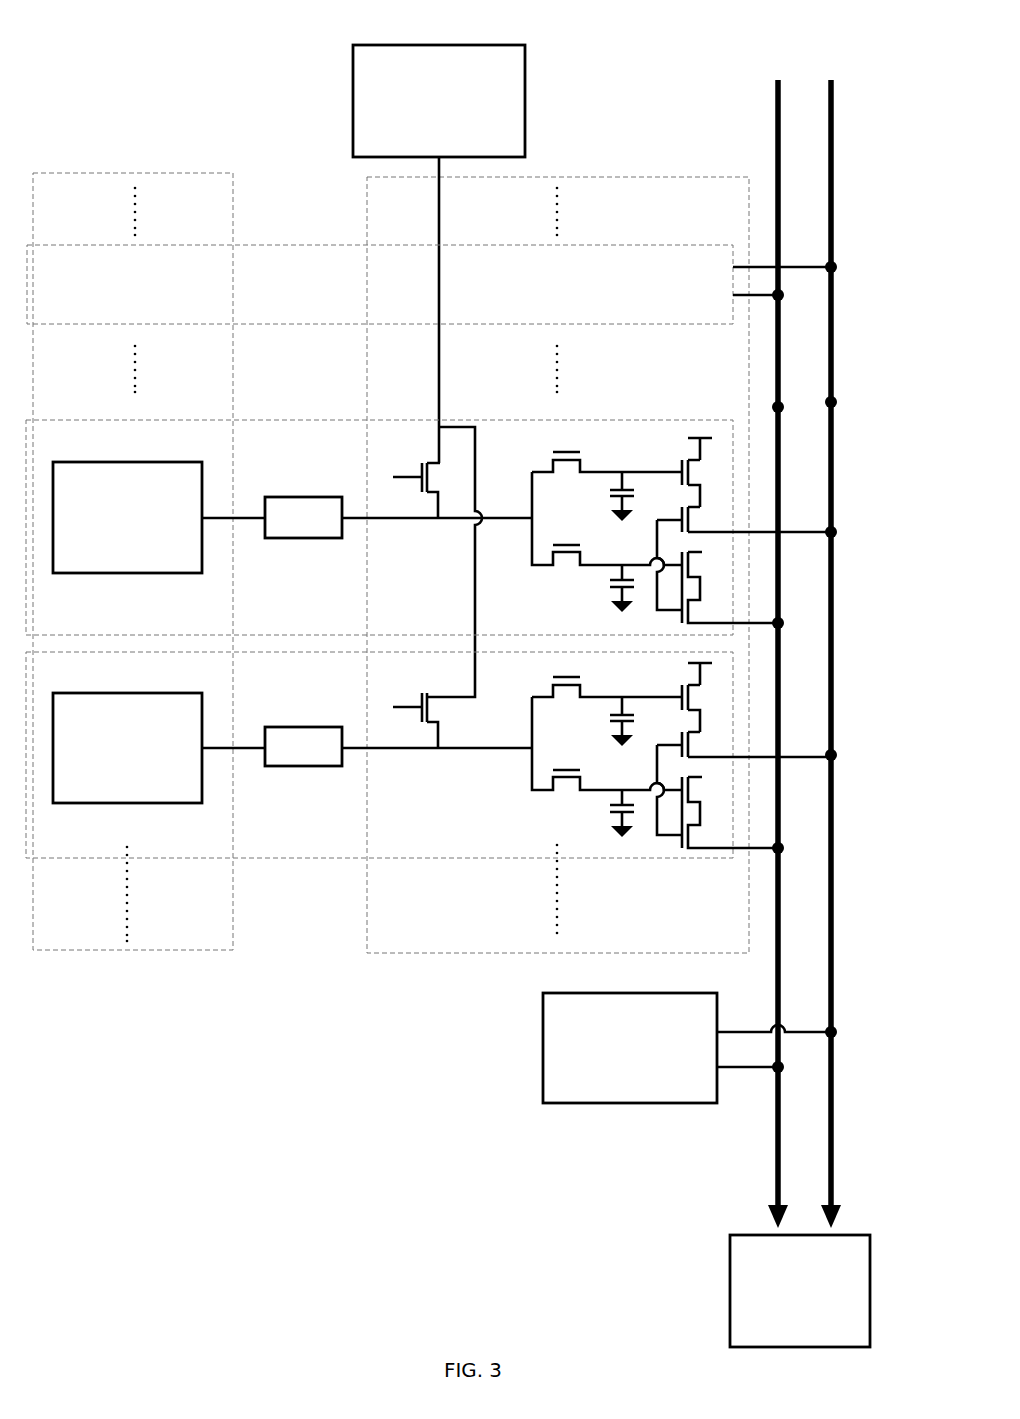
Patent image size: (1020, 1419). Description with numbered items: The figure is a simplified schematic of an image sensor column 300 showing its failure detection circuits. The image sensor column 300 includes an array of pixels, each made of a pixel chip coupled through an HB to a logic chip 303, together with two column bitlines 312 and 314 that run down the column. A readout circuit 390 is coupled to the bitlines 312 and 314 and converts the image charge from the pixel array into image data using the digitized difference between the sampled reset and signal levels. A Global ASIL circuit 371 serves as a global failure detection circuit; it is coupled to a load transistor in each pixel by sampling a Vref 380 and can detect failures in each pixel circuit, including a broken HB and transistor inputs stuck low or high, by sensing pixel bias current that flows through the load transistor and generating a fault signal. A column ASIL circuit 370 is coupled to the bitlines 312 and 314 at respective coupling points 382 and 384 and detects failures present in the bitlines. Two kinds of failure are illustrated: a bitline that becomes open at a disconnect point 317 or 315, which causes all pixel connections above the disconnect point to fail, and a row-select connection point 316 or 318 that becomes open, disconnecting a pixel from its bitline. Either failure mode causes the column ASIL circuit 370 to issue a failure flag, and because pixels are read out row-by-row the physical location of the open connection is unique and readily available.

The image sensor column 300 is at (228, 30).
The Global ASIL circuit 371 is at (422, 139).
The Vref 380 is at (441, 177).
The column bitline 312 is at (777, 123).
The column bitline 314 is at (833, 126).
The disconnect point 317 is at (776, 406).
The disconnect point 315 is at (836, 402).
The connection point 316 is at (837, 533).
The connection point 318 is at (775, 621).
The logic chip 303 is at (430, 932).
The coupling point 384 is at (838, 1031).
The column ASIL circuit 370 is at (613, 1087).
The coupling point 382 is at (774, 1068).
The readout circuit 390 is at (783, 1330).